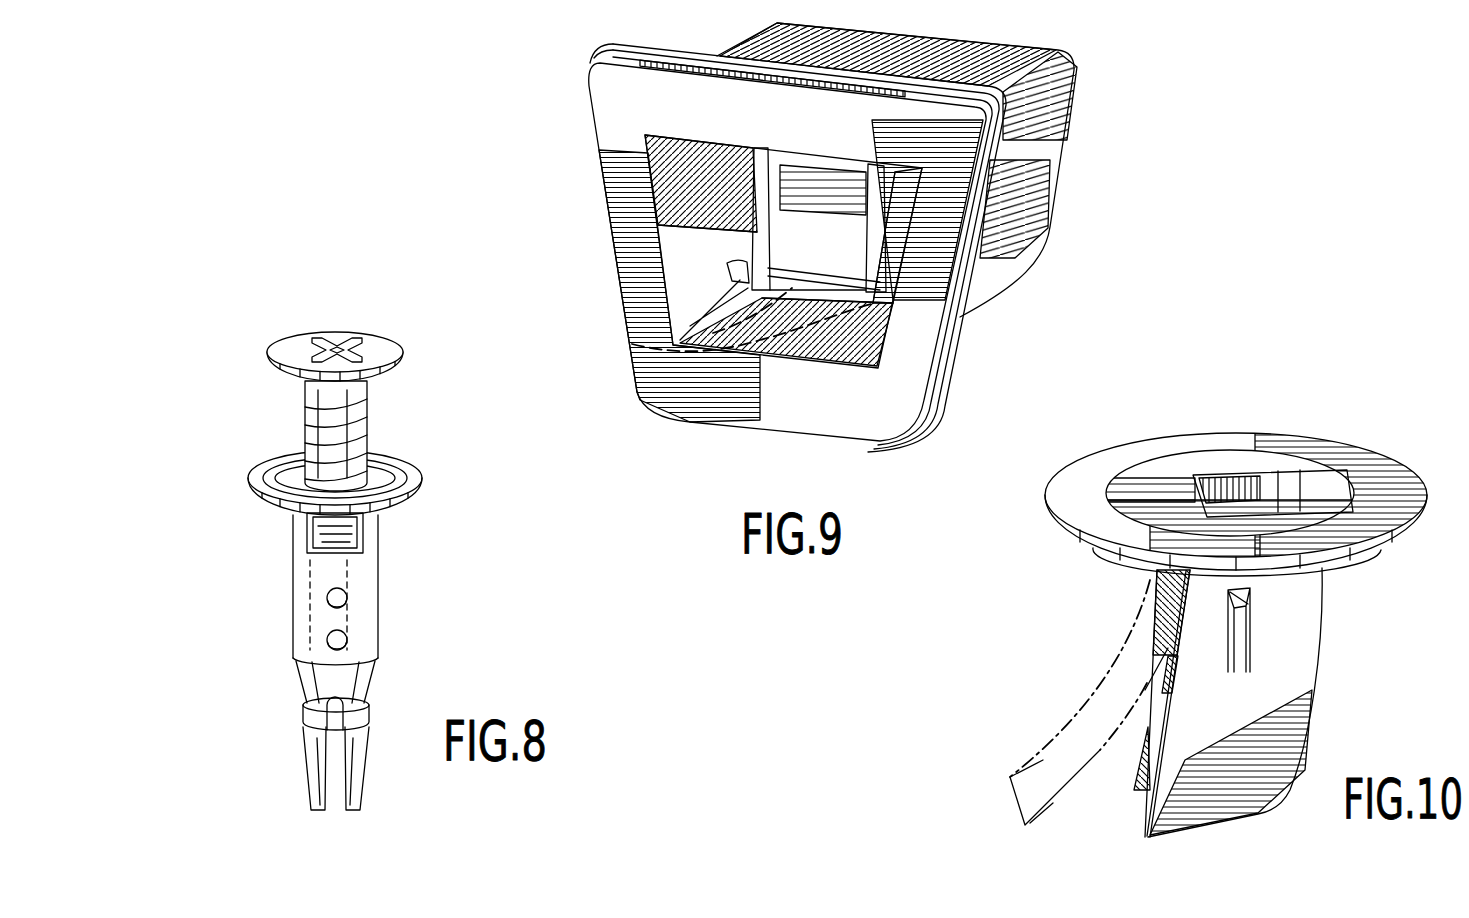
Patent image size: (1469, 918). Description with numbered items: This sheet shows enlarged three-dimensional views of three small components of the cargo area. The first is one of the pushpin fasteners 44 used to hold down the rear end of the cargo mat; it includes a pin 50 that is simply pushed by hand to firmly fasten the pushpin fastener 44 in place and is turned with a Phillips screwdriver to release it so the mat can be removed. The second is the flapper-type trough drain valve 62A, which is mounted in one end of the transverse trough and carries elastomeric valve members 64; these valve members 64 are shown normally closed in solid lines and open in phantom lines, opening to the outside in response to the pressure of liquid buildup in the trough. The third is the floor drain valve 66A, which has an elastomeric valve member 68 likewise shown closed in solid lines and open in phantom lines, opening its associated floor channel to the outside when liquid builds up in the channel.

In FIG. 8, the pushpin fastener 44 is at (284, 612).
In FIG. 8, the pin 50 is at (325, 435).
In FIG. 9, the trough drain valve 62A is at (1005, 326).
In FIG. 9, the valve members 64 is at (890, 238).
In FIG. 10, the floor drain valve 66A is at (1378, 415).
In FIG. 10, the valve member 68 is at (1043, 768).